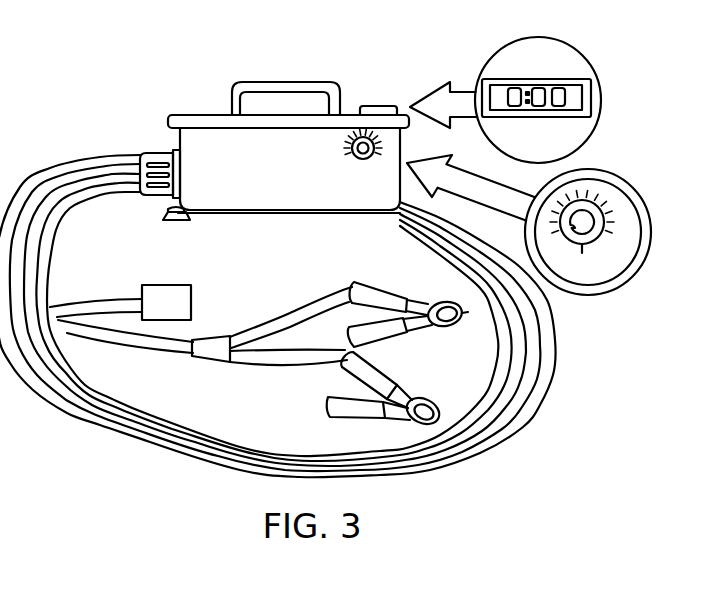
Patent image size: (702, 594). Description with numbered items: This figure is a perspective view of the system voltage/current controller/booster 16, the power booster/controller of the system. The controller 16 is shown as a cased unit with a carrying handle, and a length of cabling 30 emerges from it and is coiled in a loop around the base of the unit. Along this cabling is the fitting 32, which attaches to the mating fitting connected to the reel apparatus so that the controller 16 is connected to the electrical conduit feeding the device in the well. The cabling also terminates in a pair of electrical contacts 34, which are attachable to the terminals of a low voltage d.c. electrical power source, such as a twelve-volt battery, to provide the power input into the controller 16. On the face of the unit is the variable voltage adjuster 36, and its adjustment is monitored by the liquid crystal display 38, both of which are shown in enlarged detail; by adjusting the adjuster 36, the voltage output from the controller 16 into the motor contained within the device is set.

The system voltage/current controller/booster 16 is at (278, 77).
The hose assembly / tubing loop 30 is at (539, 399).
The fitting 32 is at (178, 292).
The electrical contacts 34 is at (430, 328).
The variable voltage adjuster 36 is at (351, 152).
The liquid crystal display 38 is at (590, 64).